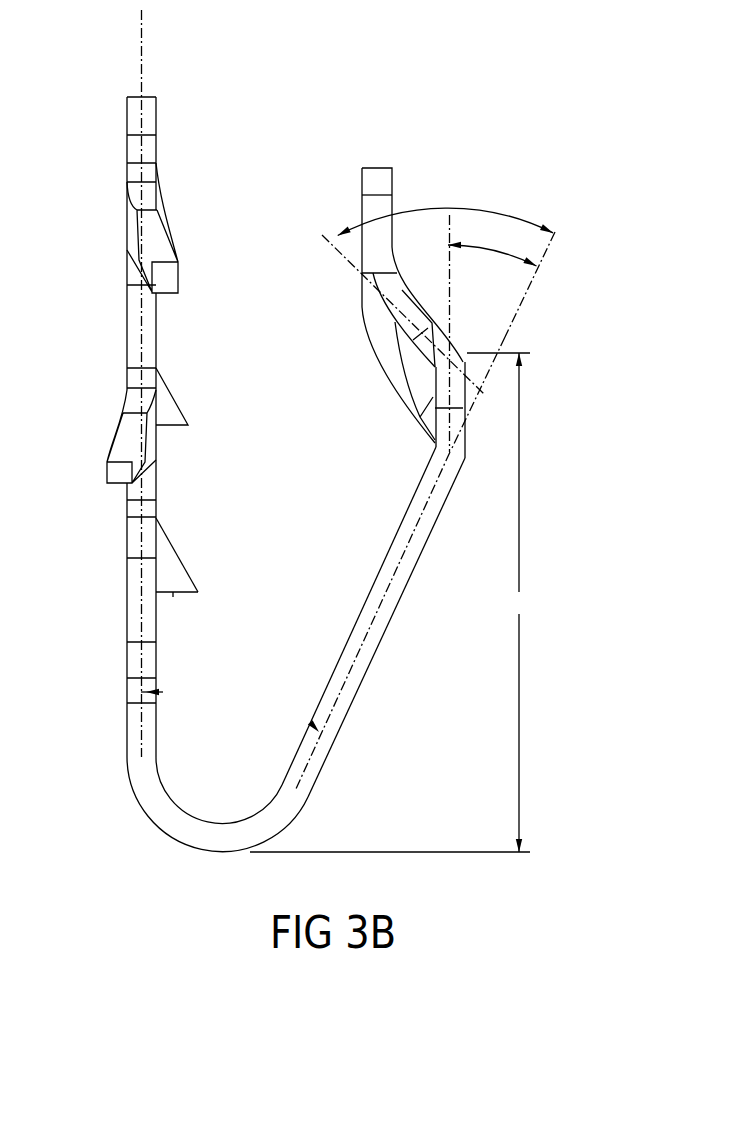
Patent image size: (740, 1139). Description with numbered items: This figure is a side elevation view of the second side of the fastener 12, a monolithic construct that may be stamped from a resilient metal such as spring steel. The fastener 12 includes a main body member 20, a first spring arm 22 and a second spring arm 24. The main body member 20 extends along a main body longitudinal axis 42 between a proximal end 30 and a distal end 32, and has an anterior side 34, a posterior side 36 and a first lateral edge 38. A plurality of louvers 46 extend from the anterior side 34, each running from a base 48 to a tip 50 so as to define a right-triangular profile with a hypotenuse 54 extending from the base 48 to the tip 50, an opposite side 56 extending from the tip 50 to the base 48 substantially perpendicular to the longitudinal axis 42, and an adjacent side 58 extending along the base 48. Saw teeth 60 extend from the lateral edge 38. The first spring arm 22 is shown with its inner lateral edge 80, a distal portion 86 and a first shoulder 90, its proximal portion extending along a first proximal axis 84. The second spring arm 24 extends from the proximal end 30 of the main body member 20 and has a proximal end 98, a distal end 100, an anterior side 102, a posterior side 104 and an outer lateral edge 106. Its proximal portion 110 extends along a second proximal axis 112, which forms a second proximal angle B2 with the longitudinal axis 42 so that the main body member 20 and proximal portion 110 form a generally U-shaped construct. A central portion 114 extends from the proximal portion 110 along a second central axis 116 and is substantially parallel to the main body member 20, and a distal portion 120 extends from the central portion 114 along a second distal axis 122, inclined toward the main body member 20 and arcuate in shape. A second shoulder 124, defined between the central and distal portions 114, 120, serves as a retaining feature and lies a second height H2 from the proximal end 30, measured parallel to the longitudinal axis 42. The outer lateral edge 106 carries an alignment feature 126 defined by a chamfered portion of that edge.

The fastener 12 is at (436, 150).
The main body member 20 is at (110, 712).
The first spring arm 22 is at (376, 396).
The second spring arm 24 is at (414, 585).
The proximal end 30 is at (214, 852).
The distal end 32 is at (134, 97).
The anterior side 34 is at (157, 330).
The posterior side 36 is at (127, 320).
The first lateral edge 38 is at (134, 608).
The main body longitudinal axis 42 is at (143, 33).
The louvers 46 is at (172, 411).
The base 48 is at (144, 570).
The tip 50 is at (188, 566).
The hypotenuse 54 is at (164, 530).
The opposite side 56 is at (173, 596).
The adjacent side 58 is at (158, 552).
The saw teeth 60 is at (112, 445).
The inner lateral edge 80 is at (375, 332).
The first proximal axis 84 is at (508, 332).
The distal portion 86 is at (372, 298).
The first shoulder 90 is at (435, 444).
The proximal end 98 is at (220, 822).
The distal end 100 is at (378, 168).
The anterior side 102 is at (341, 724).
The posterior side 104 is at (288, 776).
The outer lateral edge 106 is at (358, 677).
The proximal portion 110 is at (388, 628).
The second proximal axis 112 is at (558, 239).
The central portion 114 is at (437, 374).
The second central axis 116 is at (449, 258).
The distal portion 120 is at (335, 234).
The second distal axis 122 is at (320, 236).
The second shoulder 124 is at (457, 356).
The alignment feature 126 is at (370, 205).
The second proximal angle B2 is at (316, 731).
The second height H2 is at (391, 602).